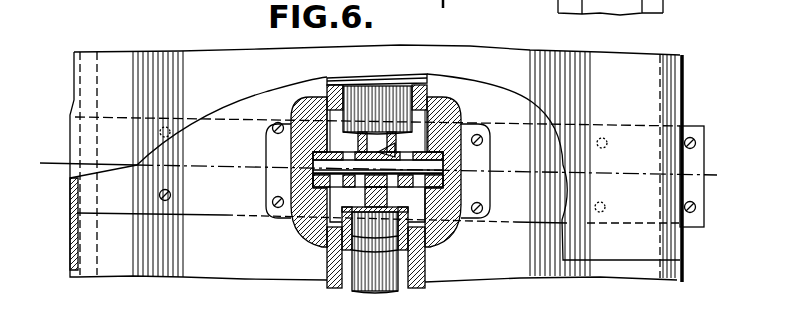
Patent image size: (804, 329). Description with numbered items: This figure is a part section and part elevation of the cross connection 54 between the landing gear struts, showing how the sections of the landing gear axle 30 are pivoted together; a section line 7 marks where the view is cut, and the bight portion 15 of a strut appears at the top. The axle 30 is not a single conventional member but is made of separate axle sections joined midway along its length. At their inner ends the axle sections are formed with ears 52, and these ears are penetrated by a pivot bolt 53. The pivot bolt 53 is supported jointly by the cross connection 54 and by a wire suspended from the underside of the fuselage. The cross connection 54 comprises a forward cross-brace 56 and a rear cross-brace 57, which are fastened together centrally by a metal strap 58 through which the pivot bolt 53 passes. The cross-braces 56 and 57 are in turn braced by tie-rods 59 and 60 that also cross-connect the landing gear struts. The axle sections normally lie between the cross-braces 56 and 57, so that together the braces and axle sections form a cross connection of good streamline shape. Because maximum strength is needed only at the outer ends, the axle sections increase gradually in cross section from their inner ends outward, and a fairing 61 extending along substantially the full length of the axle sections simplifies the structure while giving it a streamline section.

The section line 7- 7 is at (380, 171).
The bight portion 15 is at (413, 16).
The landing gear axle 30 is at (430, 73).
The ears 52 is at (390, 93).
The pivot bolt 53 is at (443, 172).
The cross connection 54 is at (246, 278).
The forward cross-brace 56 is at (184, 268).
The rear cross-brace 57 is at (540, 272).
The metal strap 58 is at (433, 204).
The tie-rod 59 is at (88, 280).
The tie-rod 60 is at (667, 282).
The fairing 61 is at (327, 88).